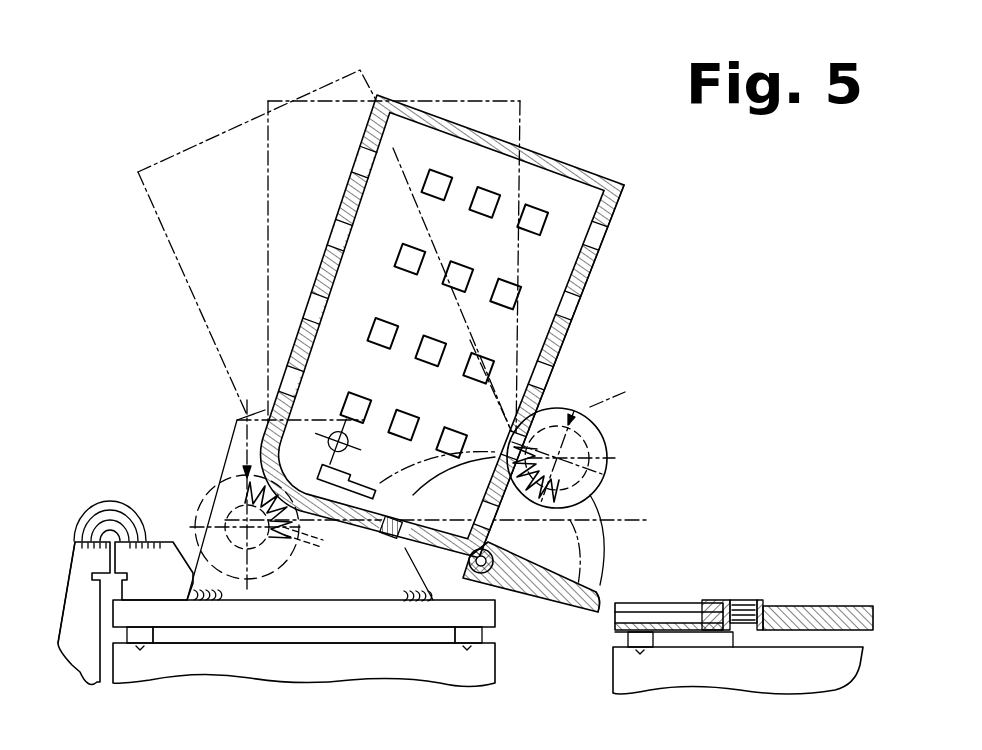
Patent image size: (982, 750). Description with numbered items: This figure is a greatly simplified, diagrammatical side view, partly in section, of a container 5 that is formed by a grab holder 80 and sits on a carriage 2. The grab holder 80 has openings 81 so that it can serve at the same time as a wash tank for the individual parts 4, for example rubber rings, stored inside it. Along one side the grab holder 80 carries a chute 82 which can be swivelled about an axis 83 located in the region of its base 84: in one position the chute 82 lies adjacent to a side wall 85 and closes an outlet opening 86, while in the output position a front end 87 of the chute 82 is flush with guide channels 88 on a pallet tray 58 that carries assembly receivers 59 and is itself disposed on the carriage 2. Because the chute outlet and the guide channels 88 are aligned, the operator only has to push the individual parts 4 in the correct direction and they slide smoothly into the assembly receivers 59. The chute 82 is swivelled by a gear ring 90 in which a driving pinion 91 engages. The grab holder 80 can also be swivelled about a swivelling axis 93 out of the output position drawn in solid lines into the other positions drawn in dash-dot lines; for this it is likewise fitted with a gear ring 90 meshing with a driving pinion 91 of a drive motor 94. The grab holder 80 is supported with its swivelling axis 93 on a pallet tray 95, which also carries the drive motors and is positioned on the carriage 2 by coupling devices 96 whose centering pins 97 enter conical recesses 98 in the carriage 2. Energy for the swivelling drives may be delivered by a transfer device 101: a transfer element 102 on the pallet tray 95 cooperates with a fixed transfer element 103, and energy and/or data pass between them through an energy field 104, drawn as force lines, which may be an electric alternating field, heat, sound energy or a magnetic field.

The carriage 2 is at (490, 670).
The individual parts 4 is at (340, 500).
The container 5 is at (165, 105).
The pallet tray 58 is at (805, 605).
The assembly receivers 59 is at (733, 635).
The grab holder 80 is at (303, 226).
The openings 81 is at (526, 224).
The chute 82 is at (580, 592).
The axis 83 is at (485, 572).
The base 84 is at (382, 545).
The side wall 85 is at (595, 278).
The outlet opening 86 is at (557, 510).
The front end 87 is at (600, 612).
The guide channels 88 is at (650, 617).
The gear ring 90 is at (590, 480).
The driving pinion 91 is at (228, 478).
The swivelling axis 93 is at (337, 432).
The drive motor 94 is at (213, 498).
The pallet tray 95 is at (325, 617).
The coupling devices 96 is at (176, 652).
The centering pins 97 is at (142, 633).
The conical recesses 98 is at (140, 637).
The transfer device 101 is at (64, 500).
The transfer element 102 is at (148, 540).
The transfer element 103 is at (83, 648).
The energy field 104 is at (100, 468).